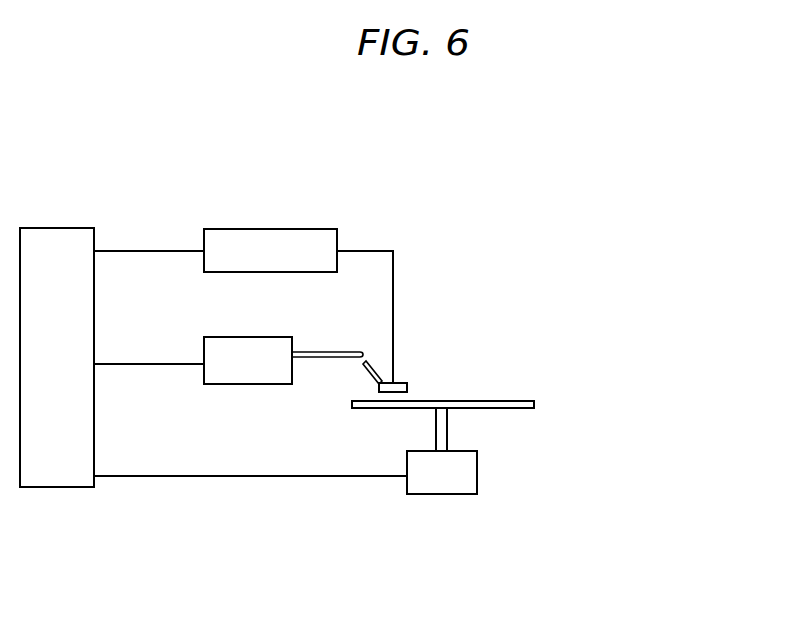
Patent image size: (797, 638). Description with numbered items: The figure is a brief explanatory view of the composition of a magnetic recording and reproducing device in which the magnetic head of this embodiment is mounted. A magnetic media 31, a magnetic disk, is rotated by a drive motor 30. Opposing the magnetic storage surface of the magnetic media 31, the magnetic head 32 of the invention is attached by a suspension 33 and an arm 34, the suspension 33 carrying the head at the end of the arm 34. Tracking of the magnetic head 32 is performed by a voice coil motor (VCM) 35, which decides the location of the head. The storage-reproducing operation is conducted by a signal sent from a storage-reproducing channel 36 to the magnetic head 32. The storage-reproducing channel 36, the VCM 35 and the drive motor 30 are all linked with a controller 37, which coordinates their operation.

The drive motor 30 is at (457, 477).
The magnetic media 31 is at (508, 400).
The magnetic head 32 is at (407, 385).
The suspension 33 is at (368, 360).
The arm 34 is at (328, 360).
The voice coil motor (VCM) 35 is at (240, 375).
The storage-reproducing channel 36 is at (285, 242).
The controller 37 is at (56, 245).